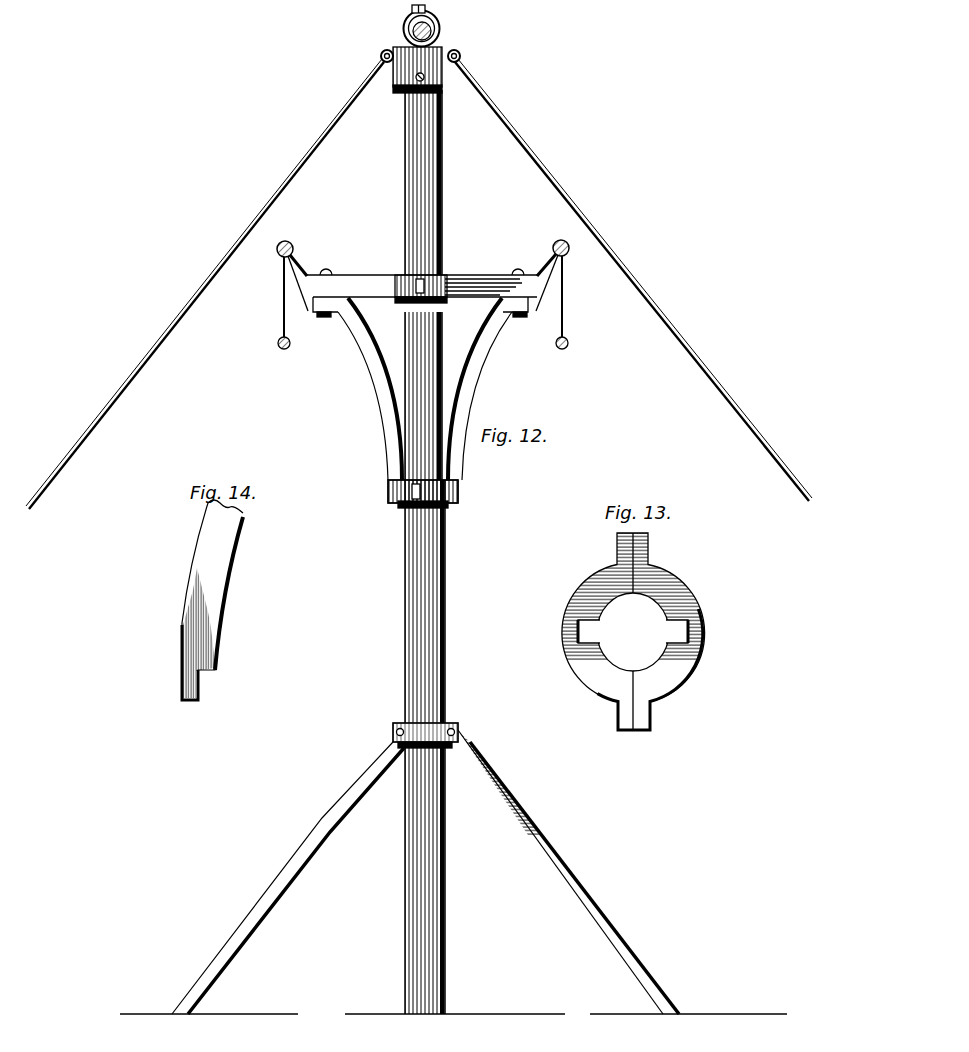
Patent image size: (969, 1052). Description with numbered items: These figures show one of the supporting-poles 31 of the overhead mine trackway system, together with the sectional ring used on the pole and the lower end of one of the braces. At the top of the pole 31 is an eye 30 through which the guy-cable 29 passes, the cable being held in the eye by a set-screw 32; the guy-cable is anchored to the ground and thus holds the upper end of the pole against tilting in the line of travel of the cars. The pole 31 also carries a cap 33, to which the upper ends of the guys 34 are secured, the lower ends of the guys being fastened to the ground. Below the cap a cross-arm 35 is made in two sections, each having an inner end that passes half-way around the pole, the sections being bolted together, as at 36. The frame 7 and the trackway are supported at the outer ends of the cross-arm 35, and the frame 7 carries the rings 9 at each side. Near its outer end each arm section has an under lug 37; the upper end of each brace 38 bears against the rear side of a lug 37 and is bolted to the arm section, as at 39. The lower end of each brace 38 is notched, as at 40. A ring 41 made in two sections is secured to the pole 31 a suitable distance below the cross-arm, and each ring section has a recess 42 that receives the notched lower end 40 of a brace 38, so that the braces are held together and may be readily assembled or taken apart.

In FIG. 12, the frame 7 is at (277, 252).
In FIG. 12, the ring 9 is at (278, 343).
In FIG. 12, the guy-cable 29 is at (440, 36).
In FIG. 12, the eyes 30 is at (404, 30).
In FIG. 12, the supporting-pole 31 is at (406, 172).
In FIG. 12, the set-screws 32 is at (409, 8).
In FIG. 12, the cap 33 is at (403, 88).
In FIG. 12, the guys 34 is at (311, 152).
In FIG. 12, the cross-arm 35 is at (378, 278).
In FIG. 12, the bolted connection 36 is at (403, 300).
In FIG. 12, the under lug 37 is at (309, 309).
In FIG. 12, the brace 38 is at (371, 362).
In FIG. 14, the brace 38 is at (222, 545).
In FIG. 12, the bolted connection 39 is at (324, 269).
In FIG. 14, the notch 40 is at (206, 681).
In FIG. 12, the ring 41 is at (389, 492).
In FIG. 13, the ring 41 is at (679, 589).
In FIG. 13, the recess 42 is at (578, 632).